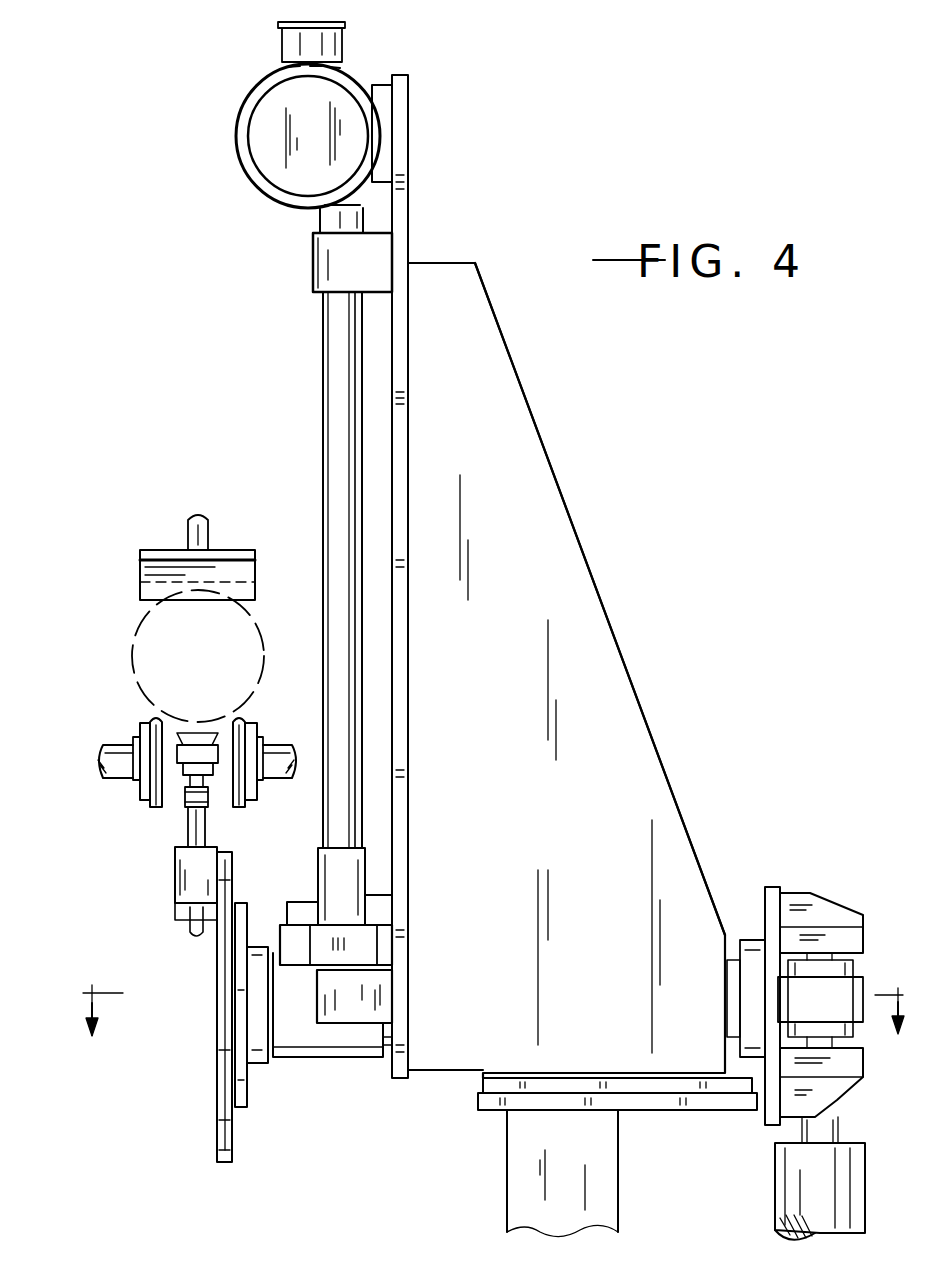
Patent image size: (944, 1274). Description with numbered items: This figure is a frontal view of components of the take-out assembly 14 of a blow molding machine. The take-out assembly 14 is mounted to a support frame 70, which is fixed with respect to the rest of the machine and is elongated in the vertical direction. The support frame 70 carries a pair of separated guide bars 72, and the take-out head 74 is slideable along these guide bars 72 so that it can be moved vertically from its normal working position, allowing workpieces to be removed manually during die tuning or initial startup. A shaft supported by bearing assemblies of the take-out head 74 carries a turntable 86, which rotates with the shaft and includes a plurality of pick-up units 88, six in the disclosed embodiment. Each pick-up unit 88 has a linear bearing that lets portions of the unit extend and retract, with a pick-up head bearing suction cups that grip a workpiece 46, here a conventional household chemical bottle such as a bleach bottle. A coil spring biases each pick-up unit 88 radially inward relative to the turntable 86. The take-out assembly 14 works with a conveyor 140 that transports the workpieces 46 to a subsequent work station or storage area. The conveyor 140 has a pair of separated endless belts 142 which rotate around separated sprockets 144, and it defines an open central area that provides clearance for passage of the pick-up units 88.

The take-out assembly 14 is at (565, 492).
The workpiece 46 is at (132, 650).
The support frame 70 is at (628, 667).
The guide bars 72 is at (323, 362).
The take-out head 74 is at (334, 1060).
The turntable 86 is at (220, 1012).
The pick-up units 88 is at (186, 828).
The conveyor 140 is at (134, 731).
The endless belts 142 is at (160, 808).
The sprockets 144 is at (258, 721).